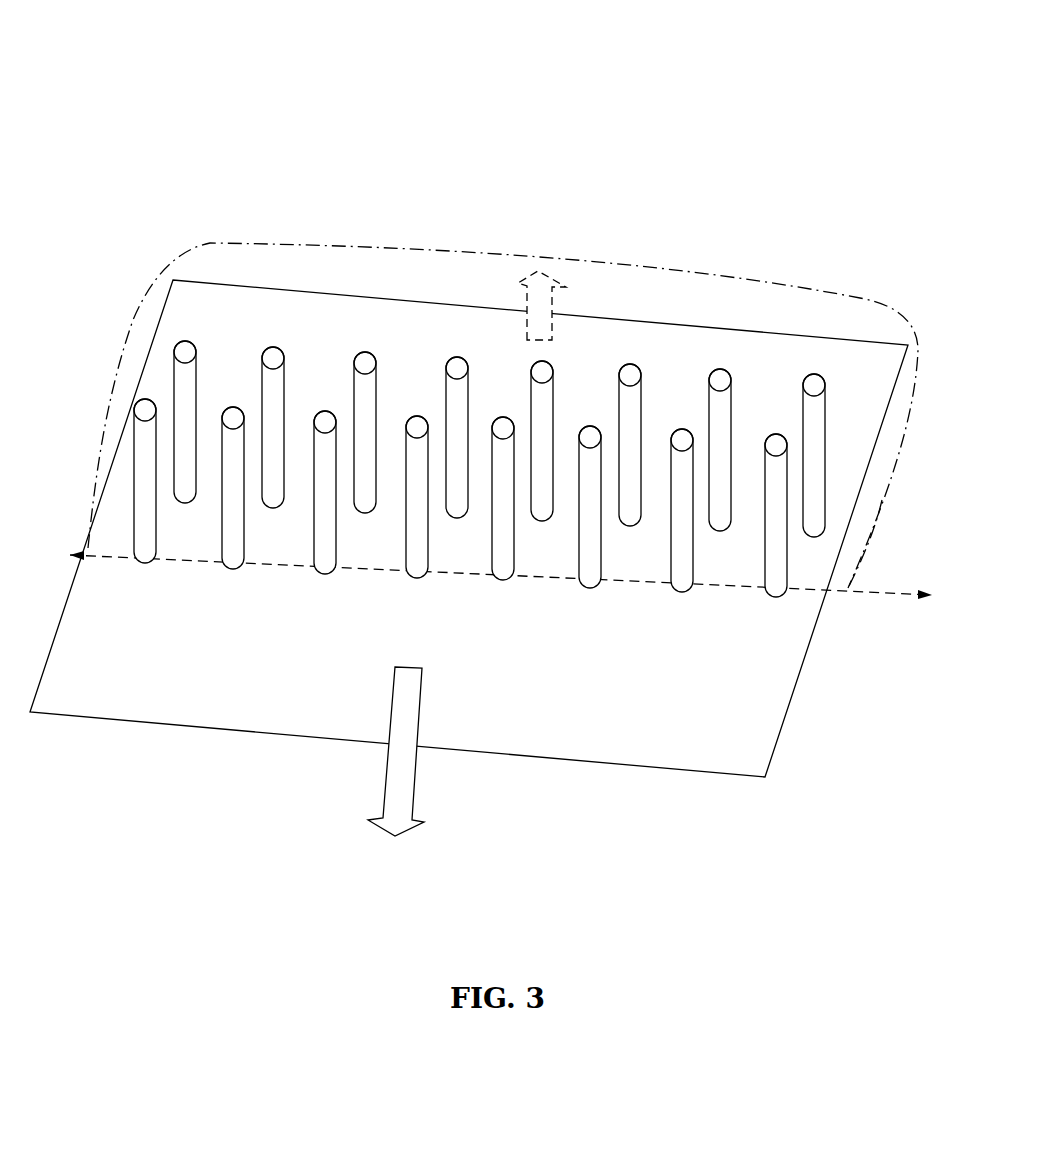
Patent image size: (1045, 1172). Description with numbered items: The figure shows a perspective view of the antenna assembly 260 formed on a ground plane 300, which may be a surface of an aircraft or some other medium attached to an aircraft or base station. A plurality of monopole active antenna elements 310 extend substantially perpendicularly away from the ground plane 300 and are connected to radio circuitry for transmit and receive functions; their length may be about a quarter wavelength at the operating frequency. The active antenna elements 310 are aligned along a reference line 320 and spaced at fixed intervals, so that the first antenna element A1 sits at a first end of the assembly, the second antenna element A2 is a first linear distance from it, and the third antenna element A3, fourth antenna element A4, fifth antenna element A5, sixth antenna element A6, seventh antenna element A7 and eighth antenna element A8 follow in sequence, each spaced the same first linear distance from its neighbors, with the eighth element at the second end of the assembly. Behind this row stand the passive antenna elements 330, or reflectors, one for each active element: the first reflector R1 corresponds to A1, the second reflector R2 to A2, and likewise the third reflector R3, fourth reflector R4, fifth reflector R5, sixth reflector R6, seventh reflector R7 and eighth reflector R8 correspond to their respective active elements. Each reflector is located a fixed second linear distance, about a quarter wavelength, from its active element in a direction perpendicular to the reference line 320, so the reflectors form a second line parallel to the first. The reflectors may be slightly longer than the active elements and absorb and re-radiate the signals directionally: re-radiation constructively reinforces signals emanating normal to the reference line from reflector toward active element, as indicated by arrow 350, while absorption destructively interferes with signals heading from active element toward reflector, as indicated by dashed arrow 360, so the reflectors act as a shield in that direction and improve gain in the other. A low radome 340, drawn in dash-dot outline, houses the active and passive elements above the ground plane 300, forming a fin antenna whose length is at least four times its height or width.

The antenna assembly 260 is at (218, 92).
The ground plane 300 is at (753, 753).
The active antenna elements 310 is at (795, 577).
The reference line 320 is at (863, 595).
The passive antenna elements 330 is at (542, 472).
The radome 340 is at (448, 250).
The arrow 350 is at (387, 742).
The dashed arrow 360 is at (552, 278).
The first reflector R1 is at (185, 352).
The second reflector R2 is at (273, 358).
The third reflector R3 is at (365, 363).
The fourth reflector R4 is at (457, 368).
The fifth reflector R5 is at (542, 372).
The sixth reflector R6 is at (630, 375).
The seventh reflector R7 is at (720, 380).
The eighth reflector R8 is at (814, 385).
The first antenna element A1 is at (145, 562).
The second antenna element A2 is at (235, 568).
The third antenna element A3 is at (326, 573).
The fourth antenna element A4 is at (417, 578).
The fifth antenna element A5 is at (503, 578).
The sixth antenna element A6 is at (590, 588).
The seventh antenna element A7 is at (682, 592).
The eighth antenna element A8 is at (778, 597).